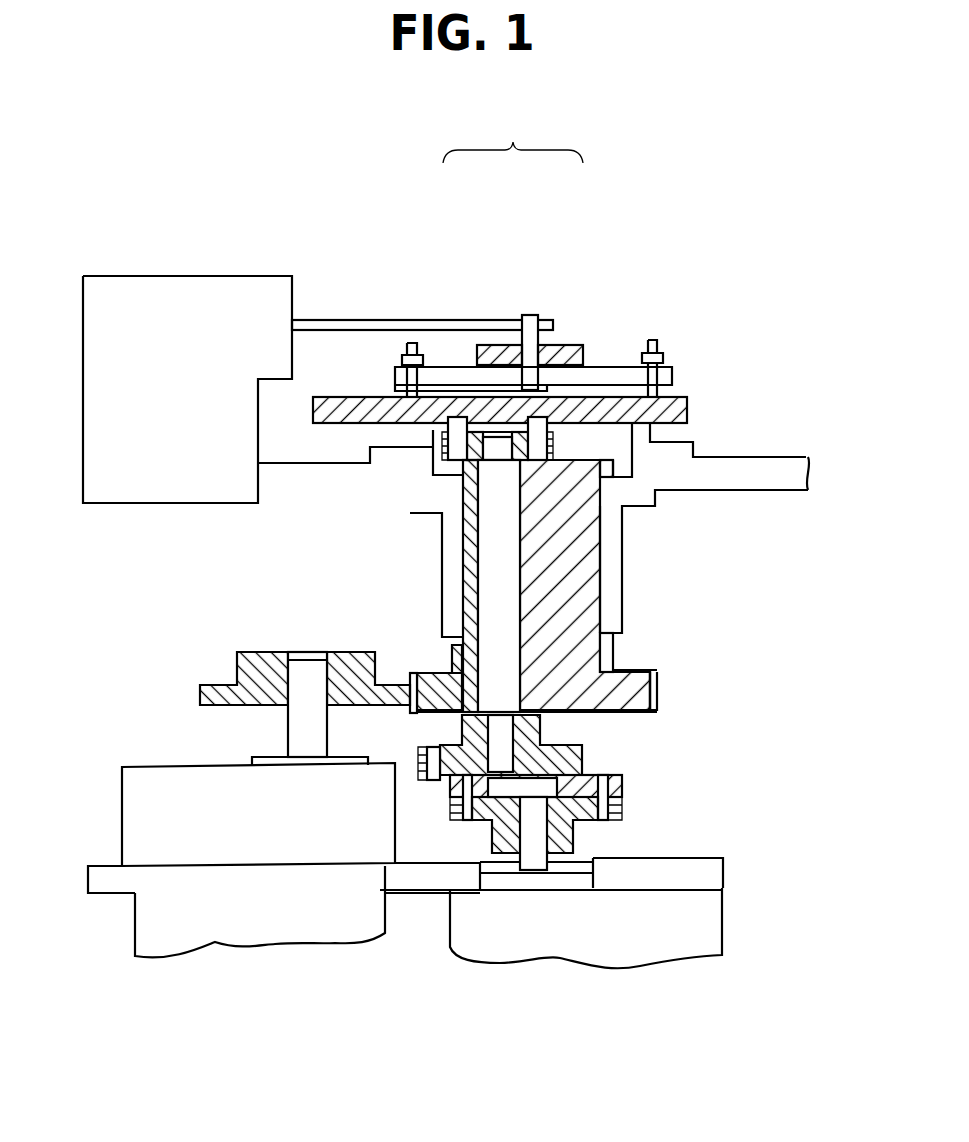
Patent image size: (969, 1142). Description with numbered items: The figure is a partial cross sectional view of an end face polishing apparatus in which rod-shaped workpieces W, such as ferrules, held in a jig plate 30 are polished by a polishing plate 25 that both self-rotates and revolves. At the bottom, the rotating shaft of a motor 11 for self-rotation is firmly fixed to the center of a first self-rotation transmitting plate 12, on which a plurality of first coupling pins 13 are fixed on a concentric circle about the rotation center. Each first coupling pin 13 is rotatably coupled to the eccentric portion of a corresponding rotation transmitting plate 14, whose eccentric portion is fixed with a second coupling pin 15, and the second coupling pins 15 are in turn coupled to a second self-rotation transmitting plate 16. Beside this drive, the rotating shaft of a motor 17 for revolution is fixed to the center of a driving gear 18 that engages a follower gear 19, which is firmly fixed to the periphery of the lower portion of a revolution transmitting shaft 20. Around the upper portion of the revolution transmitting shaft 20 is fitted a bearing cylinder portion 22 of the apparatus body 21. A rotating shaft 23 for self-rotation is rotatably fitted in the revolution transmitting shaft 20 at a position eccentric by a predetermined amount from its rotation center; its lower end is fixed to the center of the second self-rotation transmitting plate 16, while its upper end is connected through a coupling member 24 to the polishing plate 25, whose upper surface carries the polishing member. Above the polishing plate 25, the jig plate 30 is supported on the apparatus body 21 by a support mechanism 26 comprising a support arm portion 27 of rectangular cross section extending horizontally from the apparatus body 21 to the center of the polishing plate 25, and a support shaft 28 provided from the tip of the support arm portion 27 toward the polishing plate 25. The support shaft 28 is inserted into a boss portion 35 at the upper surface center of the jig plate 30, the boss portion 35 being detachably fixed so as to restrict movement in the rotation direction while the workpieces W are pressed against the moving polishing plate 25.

The motor for self-rotation 11 is at (630, 955).
The first self-rotation transmitting plate 12 is at (505, 862).
The first coupling pins 13 is at (605, 813).
The rotation transmitting plates 14 is at (623, 783).
The second coupling pins 15 is at (432, 785).
The second self-rotation transmitting plate 16 is at (585, 742).
The motor for revolution 17 is at (135, 805).
The driving gear 18 is at (253, 653).
The follower gear 19 is at (660, 670).
The revolution transmitting shaft 20 is at (573, 568).
The apparatus body 21 is at (183, 310).
The bearing cylinder portion 22 is at (613, 598).
The rotating shaft for self-rotation 23 is at (500, 565).
The coupling member 24 is at (460, 440).
The polishing plate 25 is at (690, 402).
The support mechanism 26 is at (513, 138).
The support arm portion 27 is at (388, 330).
The support shaft 28 is at (533, 317).
The jig plate 30 is at (612, 375).
The boss portion 35 is at (573, 342).
The workpieces or rod-shaped members W is at (658, 343).